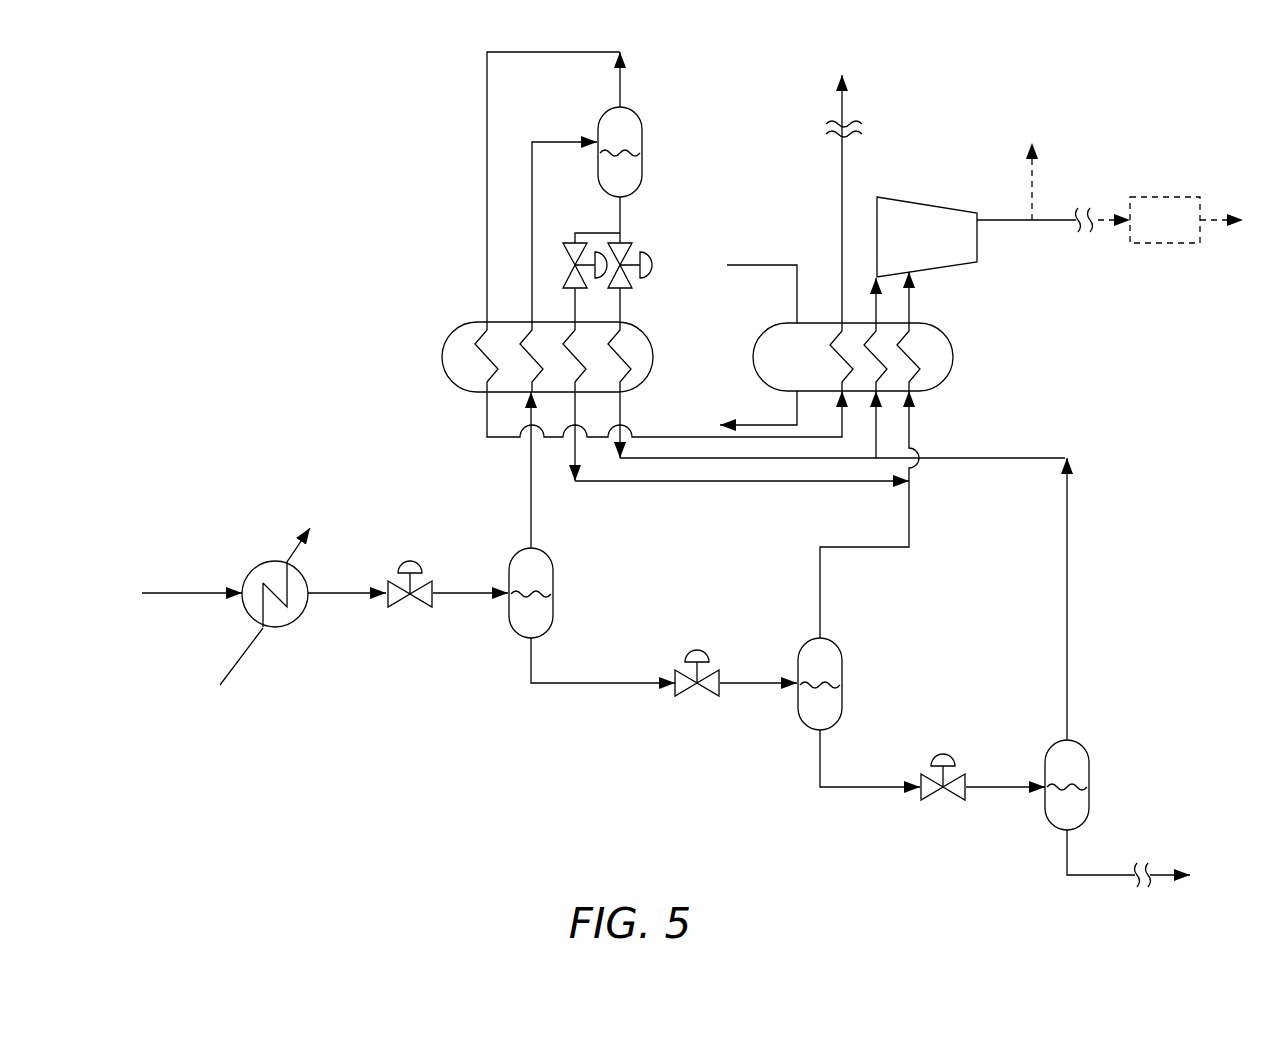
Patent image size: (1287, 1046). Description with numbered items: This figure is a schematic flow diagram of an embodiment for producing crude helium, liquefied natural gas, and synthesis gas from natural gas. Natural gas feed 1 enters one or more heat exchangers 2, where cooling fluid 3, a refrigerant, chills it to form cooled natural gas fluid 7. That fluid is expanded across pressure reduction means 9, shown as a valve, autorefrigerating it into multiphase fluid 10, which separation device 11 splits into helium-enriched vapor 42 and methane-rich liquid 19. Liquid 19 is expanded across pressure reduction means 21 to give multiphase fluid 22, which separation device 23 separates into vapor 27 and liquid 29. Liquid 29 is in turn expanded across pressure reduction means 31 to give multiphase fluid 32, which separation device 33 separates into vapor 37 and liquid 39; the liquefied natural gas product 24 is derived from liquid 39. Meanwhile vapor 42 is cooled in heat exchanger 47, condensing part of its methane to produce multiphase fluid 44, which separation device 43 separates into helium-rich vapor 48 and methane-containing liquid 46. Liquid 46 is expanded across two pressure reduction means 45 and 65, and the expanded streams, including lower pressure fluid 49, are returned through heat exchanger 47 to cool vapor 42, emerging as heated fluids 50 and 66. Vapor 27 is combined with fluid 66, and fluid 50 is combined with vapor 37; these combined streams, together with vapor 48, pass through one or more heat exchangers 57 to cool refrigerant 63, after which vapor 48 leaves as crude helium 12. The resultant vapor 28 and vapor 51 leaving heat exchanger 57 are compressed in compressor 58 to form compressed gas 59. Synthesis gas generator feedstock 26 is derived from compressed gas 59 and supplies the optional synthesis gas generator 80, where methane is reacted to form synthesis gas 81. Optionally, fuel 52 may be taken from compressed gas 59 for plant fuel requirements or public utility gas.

The natural gas feed 1 is at (185, 590).
The heat exchanger 2 is at (287, 628).
The cooling fluid 3 is at (253, 640).
The cooled natural gas fluid 7 is at (320, 592).
The pressure reduction means 9 is at (418, 607).
The multiphase fluid 10 is at (498, 592).
The separation device 11 is at (553, 582).
The crude helium 12 is at (842, 107).
The liquid 19 is at (530, 650).
The pressure reduction means 21 is at (710, 695).
The multiphase fluid 22 is at (765, 682).
The separation device 23 is at (862, 673).
The liquefied natural gas product 24 is at (1167, 877).
The synthesis gas generator feedstock 26 is at (1110, 220).
The vapor 27 is at (820, 605).
The vapor 28 is at (910, 288).
The liquid 29 is at (818, 752).
The pressure reduction means 31 is at (957, 790).
The multiphase fluid 32 is at (1010, 785).
The separation device 33 is at (1092, 772).
The vapor 37 is at (1065, 705).
The liquid 39 is at (1065, 842).
The vapor 42 is at (532, 495).
The separation device 43 is at (642, 140).
The multiphase fluid 44 is at (532, 222).
The pressure reduction means 45 is at (653, 263).
The liquid 46 is at (620, 217).
The heat exchanger 47 is at (653, 355).
The vapor 48 is at (620, 97).
The lower pressure fluid 49 is at (622, 308).
The heated fluid 50 is at (622, 412).
The vapor 51 is at (876, 300).
The fuel 52 is at (1028, 173).
The heat exchanger 57 is at (953, 367).
The compressor 58 is at (920, 198).
The compressed gas 59 is at (998, 222).
The refrigerant 63 is at (753, 263).
The pressure reduction means 65 is at (567, 272).
The heated fluid 66 is at (665, 482).
The synthesis gas generator 80 is at (1165, 220).
The synthesis gas 81 is at (1210, 218).